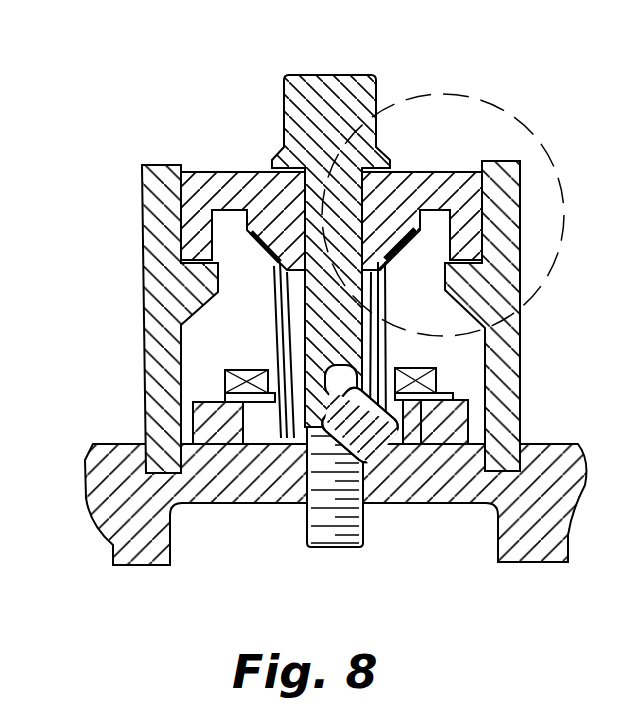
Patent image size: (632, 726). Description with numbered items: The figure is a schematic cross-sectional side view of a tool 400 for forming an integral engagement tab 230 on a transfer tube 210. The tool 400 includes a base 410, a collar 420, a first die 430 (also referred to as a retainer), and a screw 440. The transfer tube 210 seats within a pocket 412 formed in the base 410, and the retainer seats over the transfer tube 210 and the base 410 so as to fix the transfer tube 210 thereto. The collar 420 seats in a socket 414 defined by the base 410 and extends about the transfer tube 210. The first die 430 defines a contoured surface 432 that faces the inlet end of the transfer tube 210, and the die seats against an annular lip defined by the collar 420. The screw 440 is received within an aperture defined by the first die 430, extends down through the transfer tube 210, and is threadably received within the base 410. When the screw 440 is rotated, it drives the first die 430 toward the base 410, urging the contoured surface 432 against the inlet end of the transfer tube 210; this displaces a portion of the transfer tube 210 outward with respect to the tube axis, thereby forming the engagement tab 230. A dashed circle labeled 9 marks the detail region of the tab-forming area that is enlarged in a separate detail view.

The tool 400 is at (104, 162).
The base 410 is at (505, 522).
The pocket 412 is at (254, 432).
The socket 414 is at (160, 478).
The collar 420 is at (522, 357).
The first die 430 is at (213, 170).
The contoured surface 432 is at (399, 250).
The screw 440 is at (317, 88).
The engagement tab 230 is at (261, 247).
The transfer tube 210 is at (383, 317).
The detail region of FIG. 9 is at (518, 120).